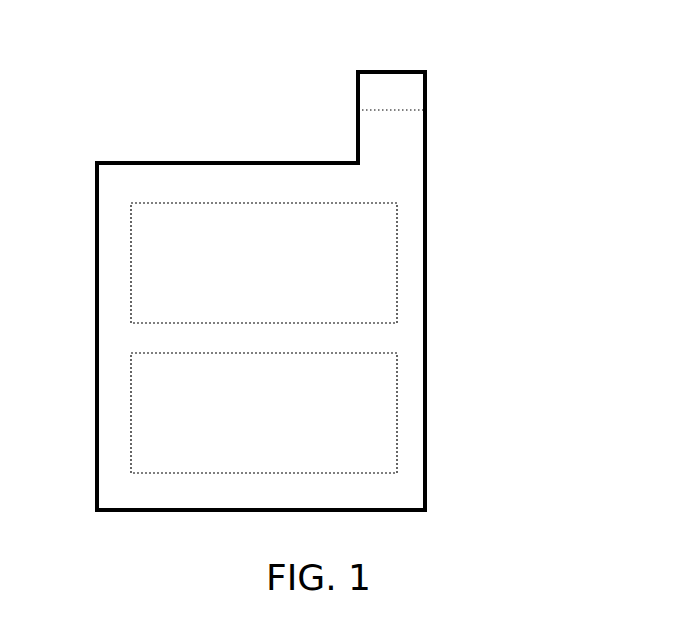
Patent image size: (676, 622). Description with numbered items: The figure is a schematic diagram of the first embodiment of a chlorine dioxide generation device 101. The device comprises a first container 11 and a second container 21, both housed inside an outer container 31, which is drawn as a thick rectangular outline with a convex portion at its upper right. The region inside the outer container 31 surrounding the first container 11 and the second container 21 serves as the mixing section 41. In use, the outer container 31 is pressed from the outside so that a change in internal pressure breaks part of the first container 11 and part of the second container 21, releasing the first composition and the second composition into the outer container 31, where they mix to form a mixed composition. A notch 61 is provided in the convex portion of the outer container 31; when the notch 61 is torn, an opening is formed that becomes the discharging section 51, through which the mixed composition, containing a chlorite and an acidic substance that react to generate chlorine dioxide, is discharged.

The chlorine dioxide generation device 101 is at (443, 42).
The outer container 31 is at (152, 163).
The discharging section 51 is at (400, 110).
The notch 61 is at (410, 113).
The first container 11 is at (393, 260).
The mixing section 41 is at (408, 342).
The second container 21 is at (393, 408).